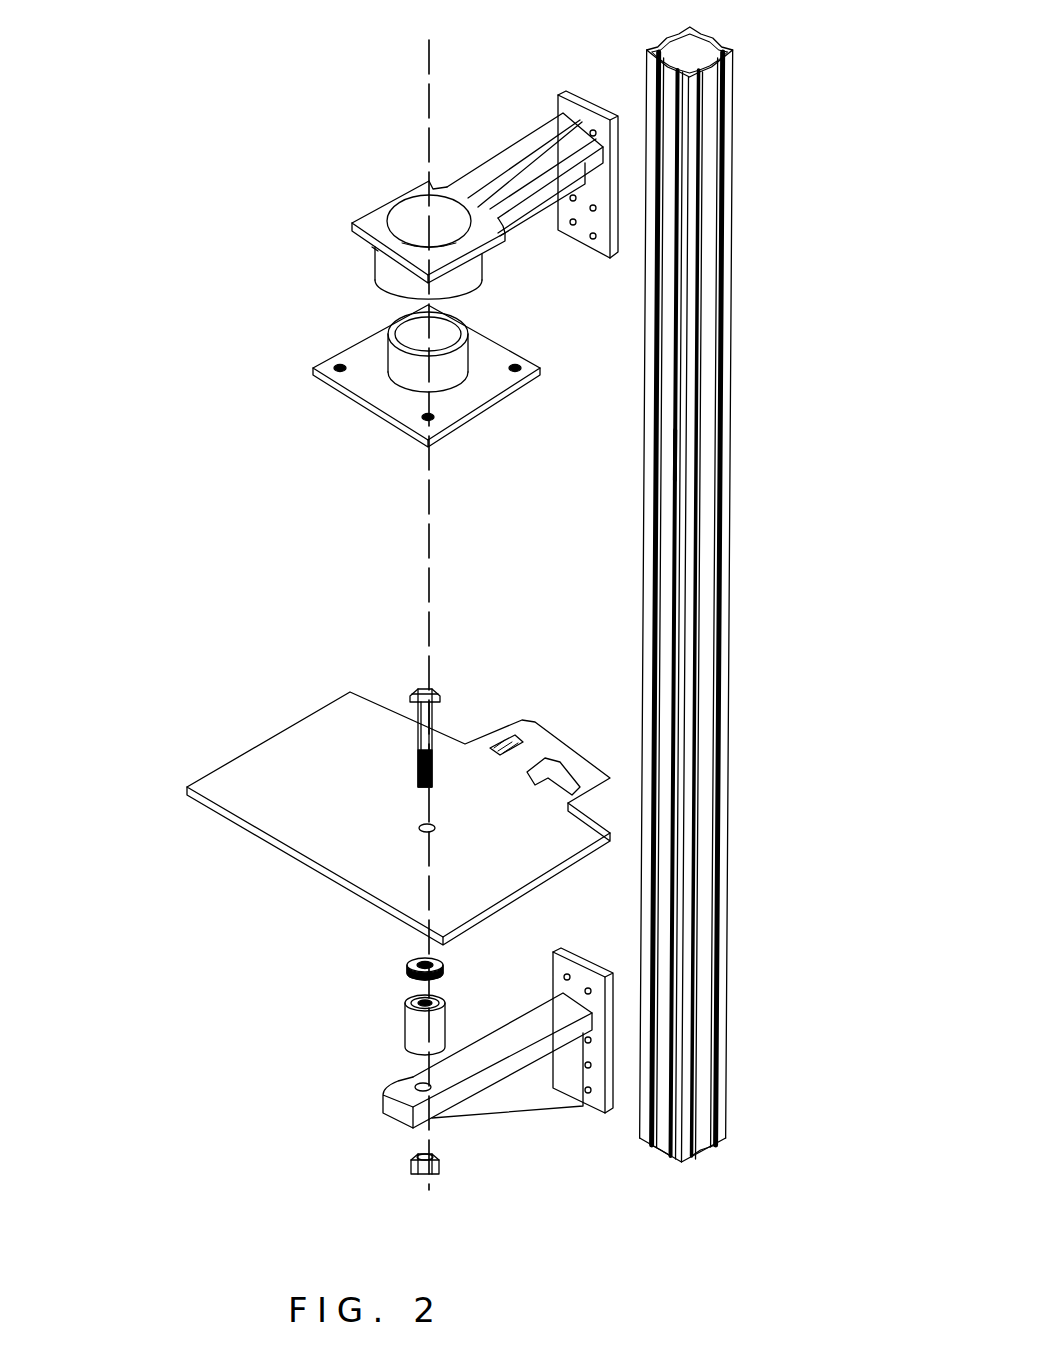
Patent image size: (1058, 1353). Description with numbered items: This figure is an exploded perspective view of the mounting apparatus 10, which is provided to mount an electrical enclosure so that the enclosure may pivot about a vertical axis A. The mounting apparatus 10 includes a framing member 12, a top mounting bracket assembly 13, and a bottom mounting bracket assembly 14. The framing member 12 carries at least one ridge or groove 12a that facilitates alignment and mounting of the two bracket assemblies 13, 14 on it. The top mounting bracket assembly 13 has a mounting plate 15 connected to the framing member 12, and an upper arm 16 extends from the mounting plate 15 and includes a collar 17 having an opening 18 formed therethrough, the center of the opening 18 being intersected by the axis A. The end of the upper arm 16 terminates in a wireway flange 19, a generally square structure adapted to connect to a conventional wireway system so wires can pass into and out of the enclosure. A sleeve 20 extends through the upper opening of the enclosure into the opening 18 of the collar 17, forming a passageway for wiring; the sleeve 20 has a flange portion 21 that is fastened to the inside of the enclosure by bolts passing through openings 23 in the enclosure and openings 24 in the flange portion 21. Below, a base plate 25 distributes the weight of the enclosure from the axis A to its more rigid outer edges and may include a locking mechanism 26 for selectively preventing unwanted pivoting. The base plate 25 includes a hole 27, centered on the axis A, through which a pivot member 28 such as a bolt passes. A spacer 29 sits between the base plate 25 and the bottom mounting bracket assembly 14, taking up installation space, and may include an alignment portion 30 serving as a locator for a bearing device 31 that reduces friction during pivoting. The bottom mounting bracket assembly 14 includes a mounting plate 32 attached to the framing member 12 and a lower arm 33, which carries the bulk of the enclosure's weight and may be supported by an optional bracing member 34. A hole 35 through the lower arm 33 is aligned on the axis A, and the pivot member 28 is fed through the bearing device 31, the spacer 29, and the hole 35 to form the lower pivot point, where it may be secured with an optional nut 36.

The mounting apparatus 10 is at (273, 58).
The axis A is at (432, 65).
The framing member 12 is at (712, 299).
The ridge or groove 12a is at (676, 461).
The top mounting bracket assembly 13 is at (363, 172).
The bottom mounting bracket assembly 14 is at (423, 1077).
The mounting plate 15 is at (595, 241).
The upper arm 16 is at (525, 212).
The collar 17 is at (467, 270).
The opening 18 is at (401, 215).
The wireway flange 19 is at (371, 220).
The sleeve 20 is at (386, 352).
The flange portion 21 is at (357, 403).
The openings 23 is at (377, 250).
The openings 24 is at (513, 374).
The base plate 25 is at (249, 746).
The locking mechanism 26 is at (553, 760).
The hole 27 is at (418, 828).
The pivot member 28 is at (413, 690).
The spacer 29 is at (403, 1032).
The alignment portion 30 is at (405, 996).
The bearing device 31 is at (406, 965).
The mounting plate 32 is at (553, 988).
The lower arm 33 is at (385, 1100).
The bracing member 34 is at (543, 1108).
The hole 35 is at (414, 1090).
The nut 36 is at (409, 1166).